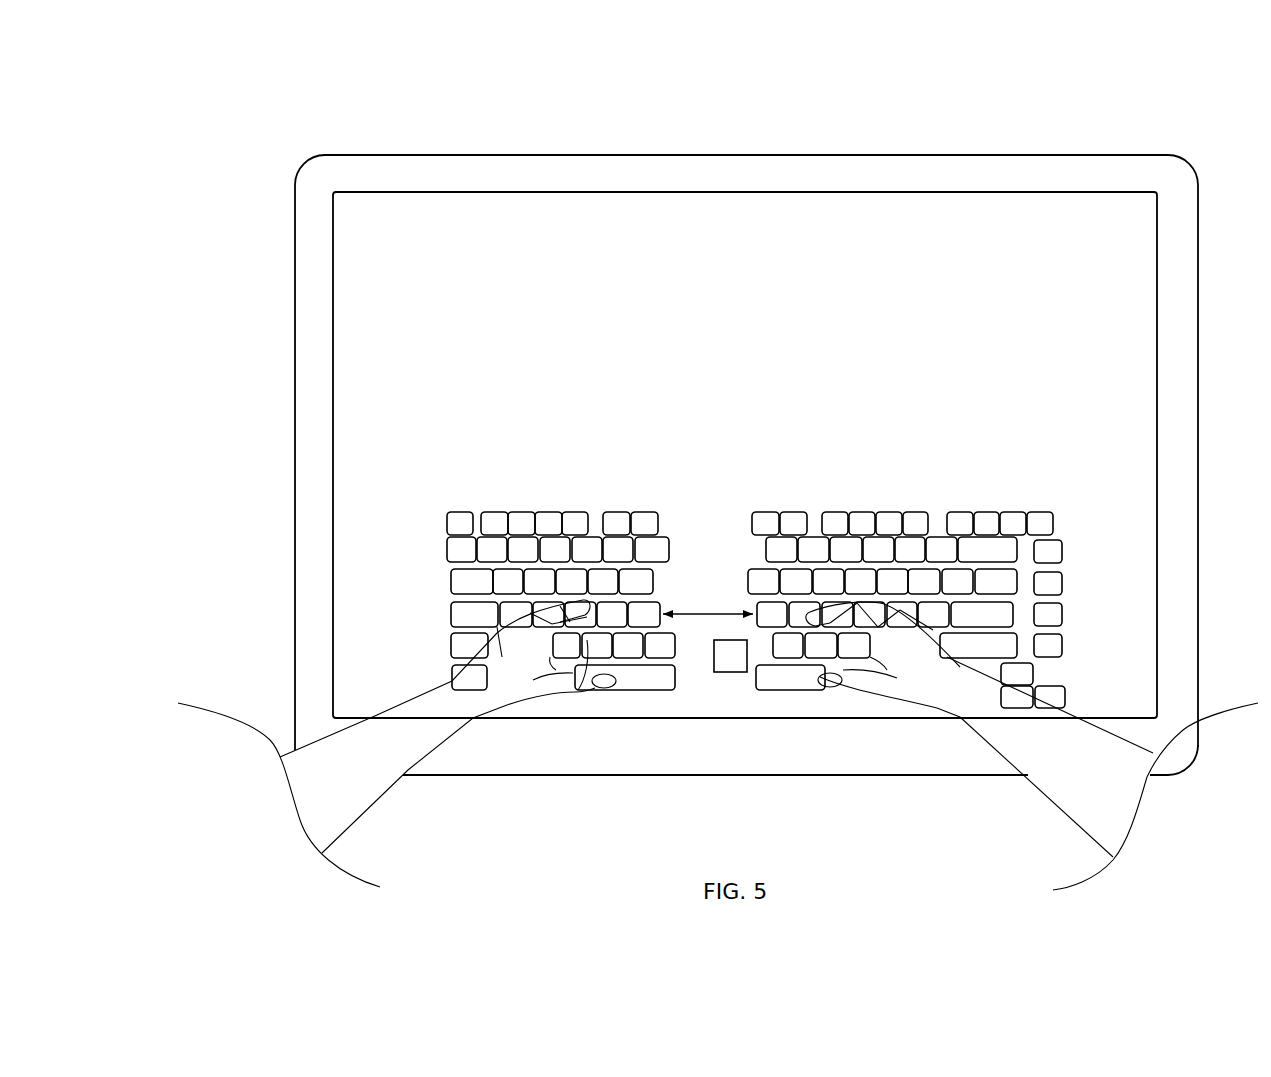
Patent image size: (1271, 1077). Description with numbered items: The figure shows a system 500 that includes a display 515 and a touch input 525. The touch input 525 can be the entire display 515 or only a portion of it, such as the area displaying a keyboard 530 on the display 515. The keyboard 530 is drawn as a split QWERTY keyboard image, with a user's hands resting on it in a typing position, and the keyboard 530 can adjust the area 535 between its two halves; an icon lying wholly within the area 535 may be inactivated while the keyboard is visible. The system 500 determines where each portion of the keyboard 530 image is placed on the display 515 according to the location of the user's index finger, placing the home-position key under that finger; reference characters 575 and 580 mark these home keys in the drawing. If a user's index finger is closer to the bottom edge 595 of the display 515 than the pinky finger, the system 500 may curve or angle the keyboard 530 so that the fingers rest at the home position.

The system 500 is at (349, 120).
The display 515 is at (433, 195).
The touch input 525 is at (450, 588).
The keyboard 530 is at (577, 690).
The area between split keyboard 535 is at (717, 614).
The G key 575 is at (614, 612).
The J key 580 is at (805, 614).
The bottom edge of the display 595 is at (597, 718).